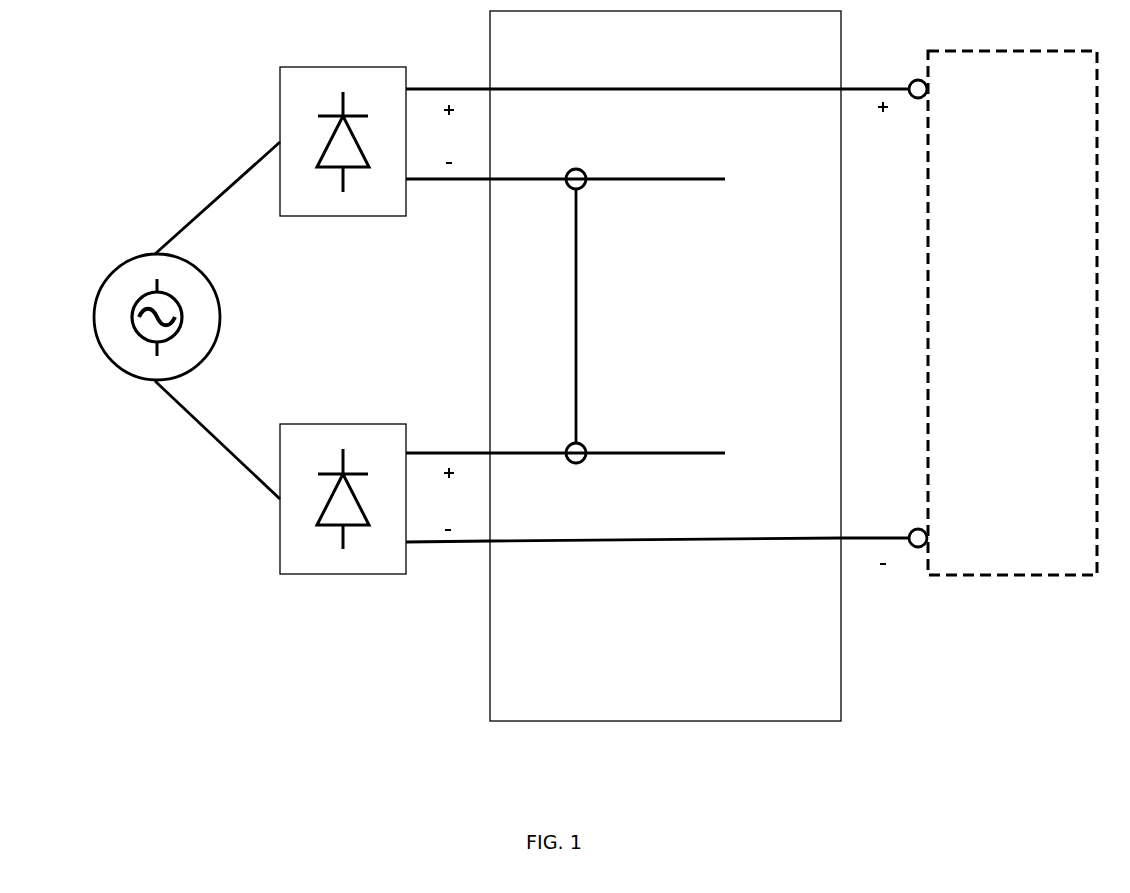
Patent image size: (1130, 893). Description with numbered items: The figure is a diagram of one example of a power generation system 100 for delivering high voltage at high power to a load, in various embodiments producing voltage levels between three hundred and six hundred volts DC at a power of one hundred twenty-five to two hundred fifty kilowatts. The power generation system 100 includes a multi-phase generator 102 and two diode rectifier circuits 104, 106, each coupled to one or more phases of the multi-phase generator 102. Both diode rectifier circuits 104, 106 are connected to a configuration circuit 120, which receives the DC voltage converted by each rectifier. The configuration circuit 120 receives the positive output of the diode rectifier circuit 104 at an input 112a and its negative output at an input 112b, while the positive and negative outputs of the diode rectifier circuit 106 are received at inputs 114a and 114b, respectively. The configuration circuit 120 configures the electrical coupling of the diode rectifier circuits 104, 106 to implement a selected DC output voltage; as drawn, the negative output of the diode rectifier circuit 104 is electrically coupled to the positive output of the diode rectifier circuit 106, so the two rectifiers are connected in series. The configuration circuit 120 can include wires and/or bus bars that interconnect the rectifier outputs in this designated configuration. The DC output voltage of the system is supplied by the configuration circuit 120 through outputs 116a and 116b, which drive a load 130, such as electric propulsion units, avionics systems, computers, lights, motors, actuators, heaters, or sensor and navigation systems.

The power generation system 100 is at (120, 663).
The multi-phase generator 102 is at (203, 272).
The diode rectifier circuit 104 is at (313, 67).
The diode rectifier circuit 106 is at (313, 424).
The input 112a is at (490, 89).
The input 112b is at (490, 179).
The input 114a is at (490, 453).
The input 114b is at (490, 542).
The output 116a is at (843, 89).
The output 116b is at (843, 538).
The configuration circuit 120 is at (796, 701).
The load 130 is at (1032, 339).